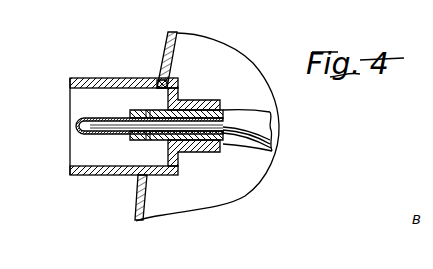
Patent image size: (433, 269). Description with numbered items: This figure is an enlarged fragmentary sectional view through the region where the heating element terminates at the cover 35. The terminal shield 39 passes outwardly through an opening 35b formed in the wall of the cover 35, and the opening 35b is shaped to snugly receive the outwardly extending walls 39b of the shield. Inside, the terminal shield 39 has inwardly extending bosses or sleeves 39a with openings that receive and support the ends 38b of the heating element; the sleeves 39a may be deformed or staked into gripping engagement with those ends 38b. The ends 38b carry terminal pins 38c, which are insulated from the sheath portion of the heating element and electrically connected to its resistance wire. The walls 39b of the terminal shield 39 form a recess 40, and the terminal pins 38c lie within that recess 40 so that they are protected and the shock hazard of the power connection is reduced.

The cover 35 is at (166, 39).
The opening in the wall of the cover 35b is at (161, 88).
The ends of the heating element 38b is at (240, 117).
The terminal pins 38c is at (93, 120).
The terminal shield 39 is at (129, 78).
The sleeves 39a is at (202, 153).
The walls 39b is at (87, 78).
The recess 40 is at (88, 150).